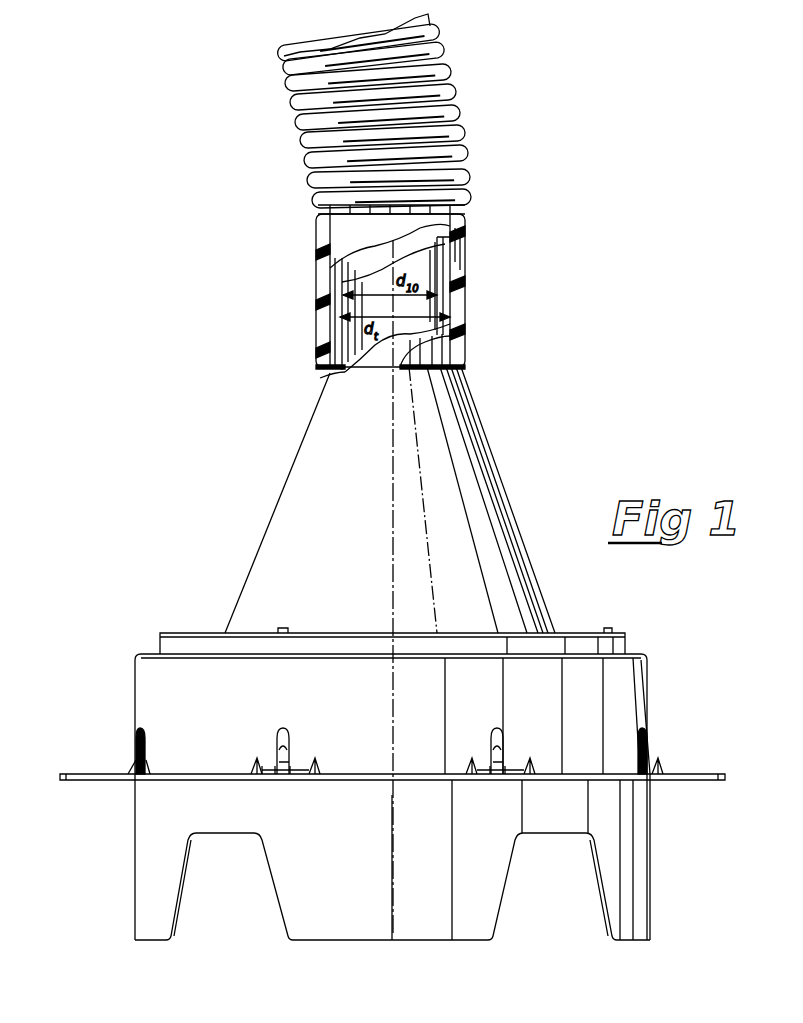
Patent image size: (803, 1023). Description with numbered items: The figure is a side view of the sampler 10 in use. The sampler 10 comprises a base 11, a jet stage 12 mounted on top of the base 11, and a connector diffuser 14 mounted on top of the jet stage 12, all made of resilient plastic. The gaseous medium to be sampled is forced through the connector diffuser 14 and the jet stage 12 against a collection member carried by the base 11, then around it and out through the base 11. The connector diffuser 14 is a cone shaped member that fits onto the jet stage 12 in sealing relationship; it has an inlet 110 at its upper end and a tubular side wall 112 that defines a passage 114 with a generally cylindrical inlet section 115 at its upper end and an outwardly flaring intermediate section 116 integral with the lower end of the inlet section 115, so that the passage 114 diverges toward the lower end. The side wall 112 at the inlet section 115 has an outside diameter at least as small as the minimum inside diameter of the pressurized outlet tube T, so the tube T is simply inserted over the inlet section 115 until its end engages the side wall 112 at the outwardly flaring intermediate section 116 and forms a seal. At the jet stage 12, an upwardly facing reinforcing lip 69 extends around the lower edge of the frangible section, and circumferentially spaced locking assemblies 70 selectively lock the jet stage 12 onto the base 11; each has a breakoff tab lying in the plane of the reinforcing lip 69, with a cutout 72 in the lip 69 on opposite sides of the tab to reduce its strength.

The outlet tube T is at (468, 194).
The inlet 110 is at (418, 262).
The tubular side wall 112 is at (440, 305).
The passage 114 is at (330, 374).
The cylindrical inlet section 115 is at (425, 268).
The outwardly flaring intermediate section 116 is at (338, 354).
The connector diffuser 14 is at (488, 450).
The sampler 10 is at (630, 644).
The jet stage 12 is at (642, 693).
The reinforcing lip 69 is at (400, 781).
The base 11 is at (648, 840).
The locking assemblies 70 is at (295, 762).
The cutout 72 is at (318, 781).